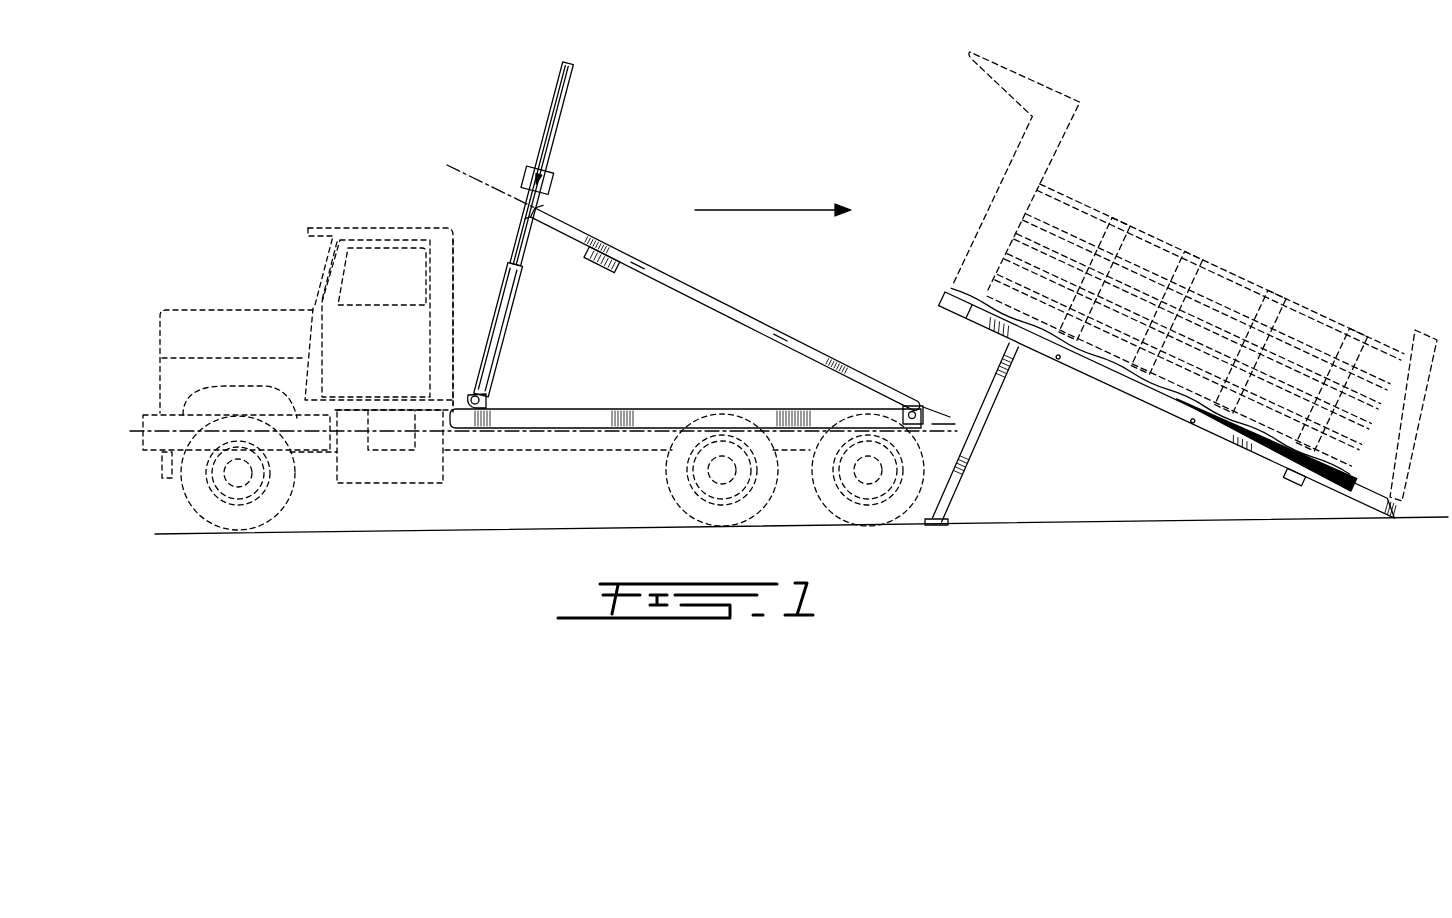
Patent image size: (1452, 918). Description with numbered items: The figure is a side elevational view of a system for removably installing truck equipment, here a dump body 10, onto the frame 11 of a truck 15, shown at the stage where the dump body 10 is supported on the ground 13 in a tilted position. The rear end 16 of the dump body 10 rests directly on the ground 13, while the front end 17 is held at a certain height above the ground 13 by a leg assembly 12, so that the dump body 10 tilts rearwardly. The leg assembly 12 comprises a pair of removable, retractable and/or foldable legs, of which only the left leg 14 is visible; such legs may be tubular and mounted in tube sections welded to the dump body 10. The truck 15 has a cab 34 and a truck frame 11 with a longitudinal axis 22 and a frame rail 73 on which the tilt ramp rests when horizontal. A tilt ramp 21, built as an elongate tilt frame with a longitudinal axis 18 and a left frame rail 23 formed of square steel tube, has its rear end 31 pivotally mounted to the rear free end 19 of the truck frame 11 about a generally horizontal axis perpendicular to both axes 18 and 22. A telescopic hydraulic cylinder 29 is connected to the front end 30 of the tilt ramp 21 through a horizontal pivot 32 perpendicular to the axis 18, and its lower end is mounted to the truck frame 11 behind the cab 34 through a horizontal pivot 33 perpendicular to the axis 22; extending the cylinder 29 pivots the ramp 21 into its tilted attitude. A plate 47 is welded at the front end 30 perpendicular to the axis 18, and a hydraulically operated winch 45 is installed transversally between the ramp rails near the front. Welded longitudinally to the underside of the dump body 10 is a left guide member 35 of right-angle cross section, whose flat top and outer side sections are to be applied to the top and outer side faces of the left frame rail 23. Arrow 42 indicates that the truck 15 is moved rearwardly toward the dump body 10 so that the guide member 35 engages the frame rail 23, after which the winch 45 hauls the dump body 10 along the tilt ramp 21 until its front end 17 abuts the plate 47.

The dump body 10 is at (1247, 293).
The truck frame 11 is at (502, 450).
The leg assembly 12 is at (985, 442).
The ground 13 is at (1147, 522).
The left leg 14 is at (998, 393).
The truck 15 is at (349, 222).
The rear end of the dump body 16 is at (1395, 500).
The front end of the dump body 17 is at (948, 292).
The longitudinal axis of the tilt ramp 18 is at (465, 178).
The rear free end of the truck frame 19 is at (918, 427).
The tilt ramp 21 is at (710, 295).
The longitudinal axis of the truck frame 22 is at (136, 434).
The left frame rail 23 is at (773, 330).
The telescopic hydraulic cylinder 29 is at (512, 302).
The front end of the tilt ramp 30 is at (537, 217).
The rear end of the tilt ramp 31 is at (918, 400).
The horizontal pivot 32 is at (550, 173).
The horizontal pivot 33 is at (484, 400).
The cab 34 is at (445, 303).
The left guide member 35 is at (1244, 453).
The arrow 42 is at (795, 208).
The hydraulically operated winch 45 is at (613, 273).
The plate 47 is at (548, 202).
The frame rail of the truck frame 73 is at (597, 437).